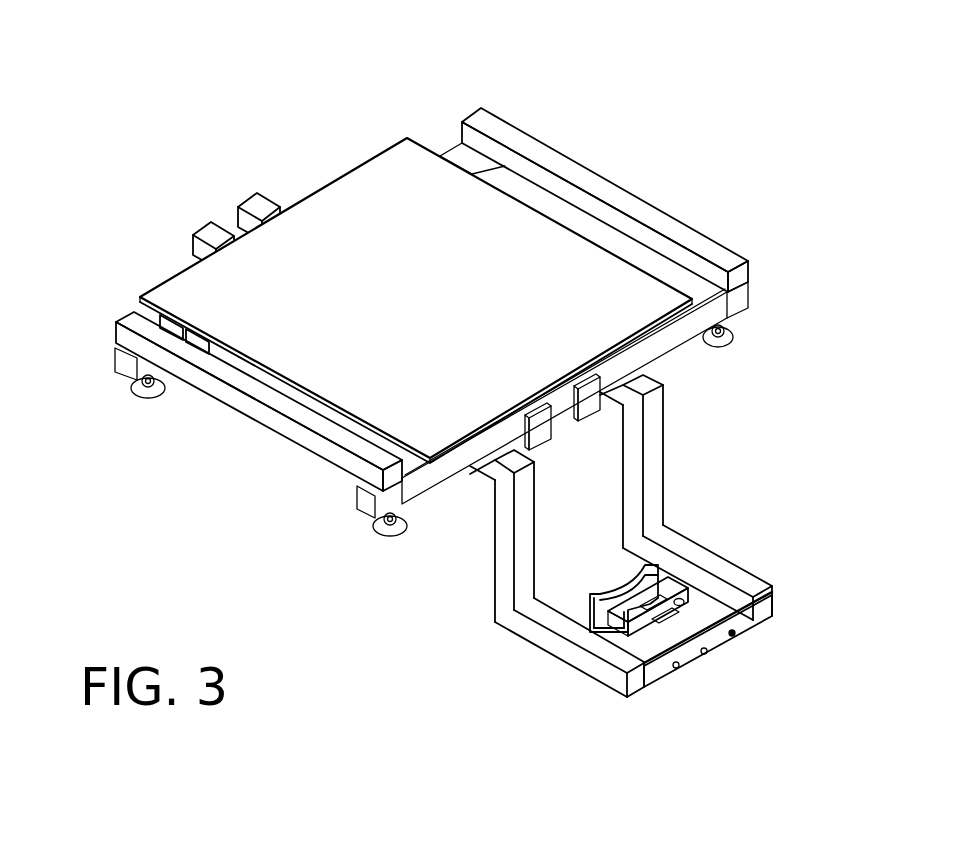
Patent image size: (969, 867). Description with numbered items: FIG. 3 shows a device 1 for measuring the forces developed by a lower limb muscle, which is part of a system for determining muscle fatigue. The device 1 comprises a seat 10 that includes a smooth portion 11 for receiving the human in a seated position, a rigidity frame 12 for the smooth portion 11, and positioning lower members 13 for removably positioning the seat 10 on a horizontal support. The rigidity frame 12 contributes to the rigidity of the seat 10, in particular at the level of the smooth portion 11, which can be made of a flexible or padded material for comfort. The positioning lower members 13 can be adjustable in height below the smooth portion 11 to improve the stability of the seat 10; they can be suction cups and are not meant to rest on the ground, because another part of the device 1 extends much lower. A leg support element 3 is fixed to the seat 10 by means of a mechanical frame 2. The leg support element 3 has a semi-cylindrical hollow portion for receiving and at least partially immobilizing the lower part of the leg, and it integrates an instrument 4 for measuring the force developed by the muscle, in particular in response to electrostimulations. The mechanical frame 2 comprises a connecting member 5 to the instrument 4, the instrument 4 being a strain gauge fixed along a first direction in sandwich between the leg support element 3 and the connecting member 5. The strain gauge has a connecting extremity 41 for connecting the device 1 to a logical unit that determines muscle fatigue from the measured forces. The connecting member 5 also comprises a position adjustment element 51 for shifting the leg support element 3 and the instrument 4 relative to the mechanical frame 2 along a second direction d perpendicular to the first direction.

The device 1 is at (167, 112).
The mechanical frame 2 is at (644, 383).
The leg support element 3 is at (630, 592).
The instrument 4 is at (637, 620).
The connecting member 5 is at (667, 675).
The seat 10 is at (358, 215).
The smooth portion 11 is at (395, 175).
The rigidity frame 12 is at (583, 175).
The positioning lower members 13 is at (737, 336).
The connecting extremity 41 is at (684, 601).
The position adjustment element 51 is at (736, 633).